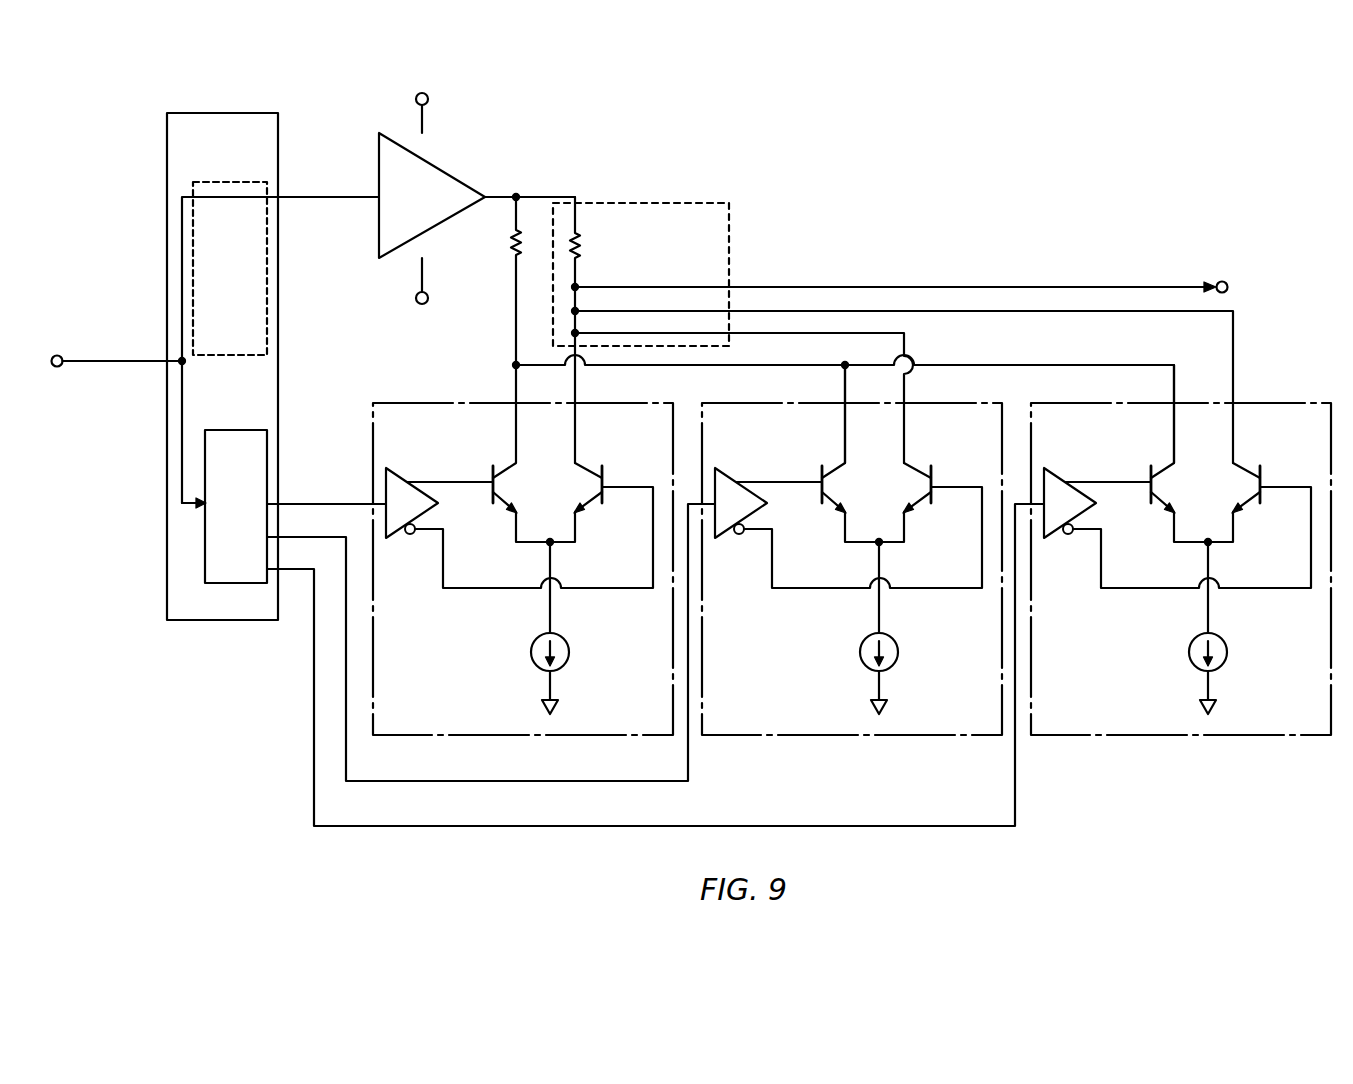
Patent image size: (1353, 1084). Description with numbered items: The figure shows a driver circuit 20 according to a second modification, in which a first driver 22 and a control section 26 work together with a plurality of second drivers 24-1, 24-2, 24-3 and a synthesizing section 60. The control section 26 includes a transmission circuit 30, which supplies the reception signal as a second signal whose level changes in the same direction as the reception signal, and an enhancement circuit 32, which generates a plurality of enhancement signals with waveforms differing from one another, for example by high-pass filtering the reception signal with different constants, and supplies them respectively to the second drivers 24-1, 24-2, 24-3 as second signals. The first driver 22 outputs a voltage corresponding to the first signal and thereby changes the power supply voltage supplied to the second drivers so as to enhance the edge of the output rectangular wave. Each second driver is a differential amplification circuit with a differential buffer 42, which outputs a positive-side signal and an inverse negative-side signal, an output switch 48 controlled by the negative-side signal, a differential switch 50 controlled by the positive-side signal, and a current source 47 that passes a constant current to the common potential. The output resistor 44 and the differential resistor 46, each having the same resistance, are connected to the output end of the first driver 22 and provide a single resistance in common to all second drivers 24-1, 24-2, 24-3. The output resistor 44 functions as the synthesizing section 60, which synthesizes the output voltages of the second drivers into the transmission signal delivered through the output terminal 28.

The driver circuit 20 is at (964, 133).
The first driver 22 is at (448, 172).
The second driver 24-1 is at (407, 403).
The second driver 24-2 is at (961, 401).
The second driver 24-3 is at (1290, 401).
The control section 26 is at (256, 113).
The output terminal 28 is at (1228, 282).
The transmission circuit 30 is at (231, 356).
The enhancement circuit 32 is at (225, 430).
The differential buffer 42 is at (400, 468).
The output resistor 44 is at (582, 250).
The differential resistor 46 is at (502, 252).
The current source 47 is at (568, 645).
The output switch 48 is at (589, 474).
The differential switch 50 is at (509, 487).
The synthesizing section 60 is at (731, 258).